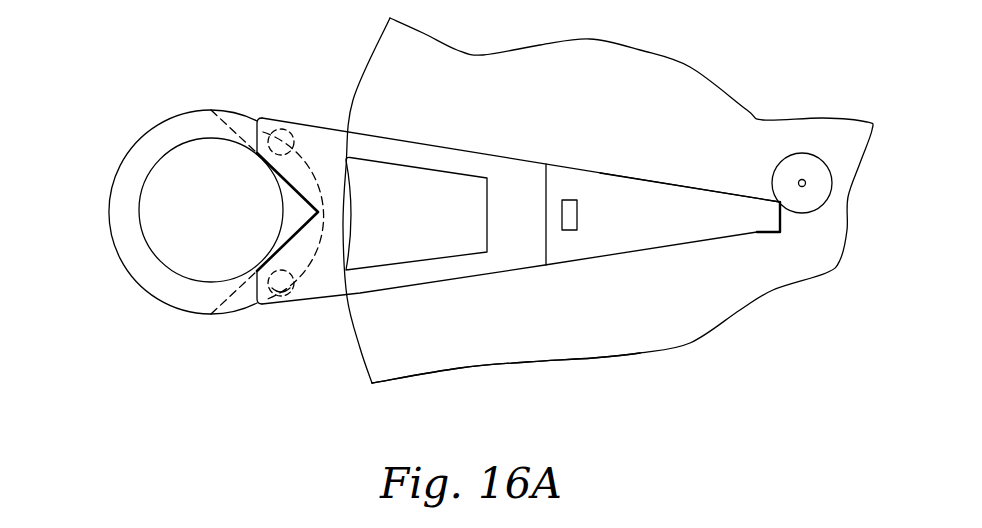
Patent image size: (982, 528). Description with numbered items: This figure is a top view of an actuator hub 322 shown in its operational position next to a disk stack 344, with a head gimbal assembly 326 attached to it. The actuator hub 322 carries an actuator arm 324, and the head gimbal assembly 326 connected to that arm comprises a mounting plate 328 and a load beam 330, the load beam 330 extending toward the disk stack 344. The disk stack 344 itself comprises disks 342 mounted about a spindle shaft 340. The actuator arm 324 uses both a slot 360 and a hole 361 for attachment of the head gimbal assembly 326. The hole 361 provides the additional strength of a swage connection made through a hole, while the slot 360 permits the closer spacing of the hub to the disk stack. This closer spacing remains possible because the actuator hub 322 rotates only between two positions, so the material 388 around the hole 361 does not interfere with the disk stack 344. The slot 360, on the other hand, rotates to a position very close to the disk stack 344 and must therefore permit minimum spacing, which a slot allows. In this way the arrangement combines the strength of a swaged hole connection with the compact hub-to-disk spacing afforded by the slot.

The actuator hub 322 is at (112, 240).
The actuator arm 324 is at (262, 309).
The head gimbal assembly 326 is at (518, 158).
The mounting plate 328 is at (463, 152).
The load beam 330 is at (697, 188).
The spindle shaft 340 is at (800, 181).
The disks 342 is at (607, 358).
The disk stack 344 is at (697, 350).
The slot 360 is at (291, 129).
The hole 361 is at (267, 298).
The material around hole 388 is at (297, 304).